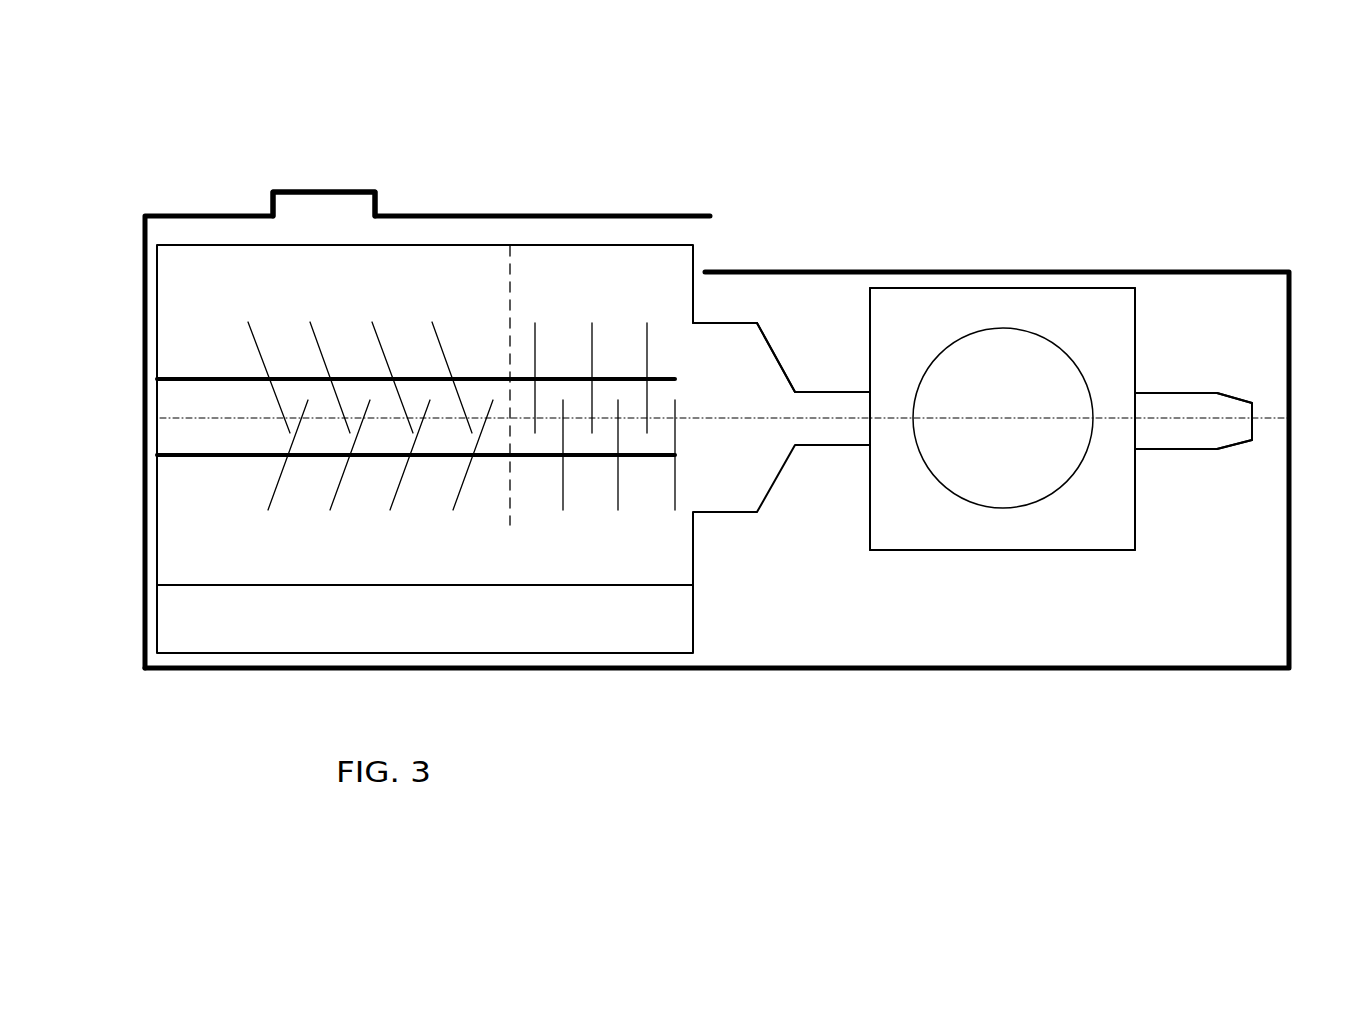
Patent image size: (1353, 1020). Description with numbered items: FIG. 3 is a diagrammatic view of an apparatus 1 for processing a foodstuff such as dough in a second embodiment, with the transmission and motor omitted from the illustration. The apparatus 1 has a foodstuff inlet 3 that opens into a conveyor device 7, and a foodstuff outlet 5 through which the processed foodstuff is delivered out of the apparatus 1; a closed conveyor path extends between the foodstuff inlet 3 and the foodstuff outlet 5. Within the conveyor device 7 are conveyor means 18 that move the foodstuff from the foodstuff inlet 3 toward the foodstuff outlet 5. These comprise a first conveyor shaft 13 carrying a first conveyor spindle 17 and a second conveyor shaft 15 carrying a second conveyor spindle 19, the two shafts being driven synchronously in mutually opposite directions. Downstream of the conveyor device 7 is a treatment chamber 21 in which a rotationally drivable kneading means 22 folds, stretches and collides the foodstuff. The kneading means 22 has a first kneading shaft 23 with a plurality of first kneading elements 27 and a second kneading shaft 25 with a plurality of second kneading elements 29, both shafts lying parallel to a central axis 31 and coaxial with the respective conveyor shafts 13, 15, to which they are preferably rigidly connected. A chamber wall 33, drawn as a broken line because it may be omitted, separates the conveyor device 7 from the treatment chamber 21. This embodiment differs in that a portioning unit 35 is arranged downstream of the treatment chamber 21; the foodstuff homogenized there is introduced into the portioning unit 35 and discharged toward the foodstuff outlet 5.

The apparatus 1 is at (262, 140).
The foodstuff inlet 3 is at (342, 160).
The foodstuff outlet 5 is at (1272, 431).
The conveyor device 7 is at (205, 262).
The first conveyor shaft 13 is at (176, 378).
The second conveyor shaft 15 is at (210, 462).
The first conveyor spindle 17 is at (440, 323).
The conveyor means 18 is at (367, 497).
The second conveyor spindle 19 is at (480, 508).
The treatment chamber 21 is at (645, 255).
The kneading means 22 is at (612, 340).
The first kneading shaft 23 is at (675, 372).
The second kneading shaft 25 is at (648, 460).
The first kneading elements 27 is at (663, 318).
The second kneading elements 29 is at (601, 508).
The central axis 31 is at (172, 418).
The chamber wall 33 is at (515, 258).
The portioning unit 35 is at (987, 585).